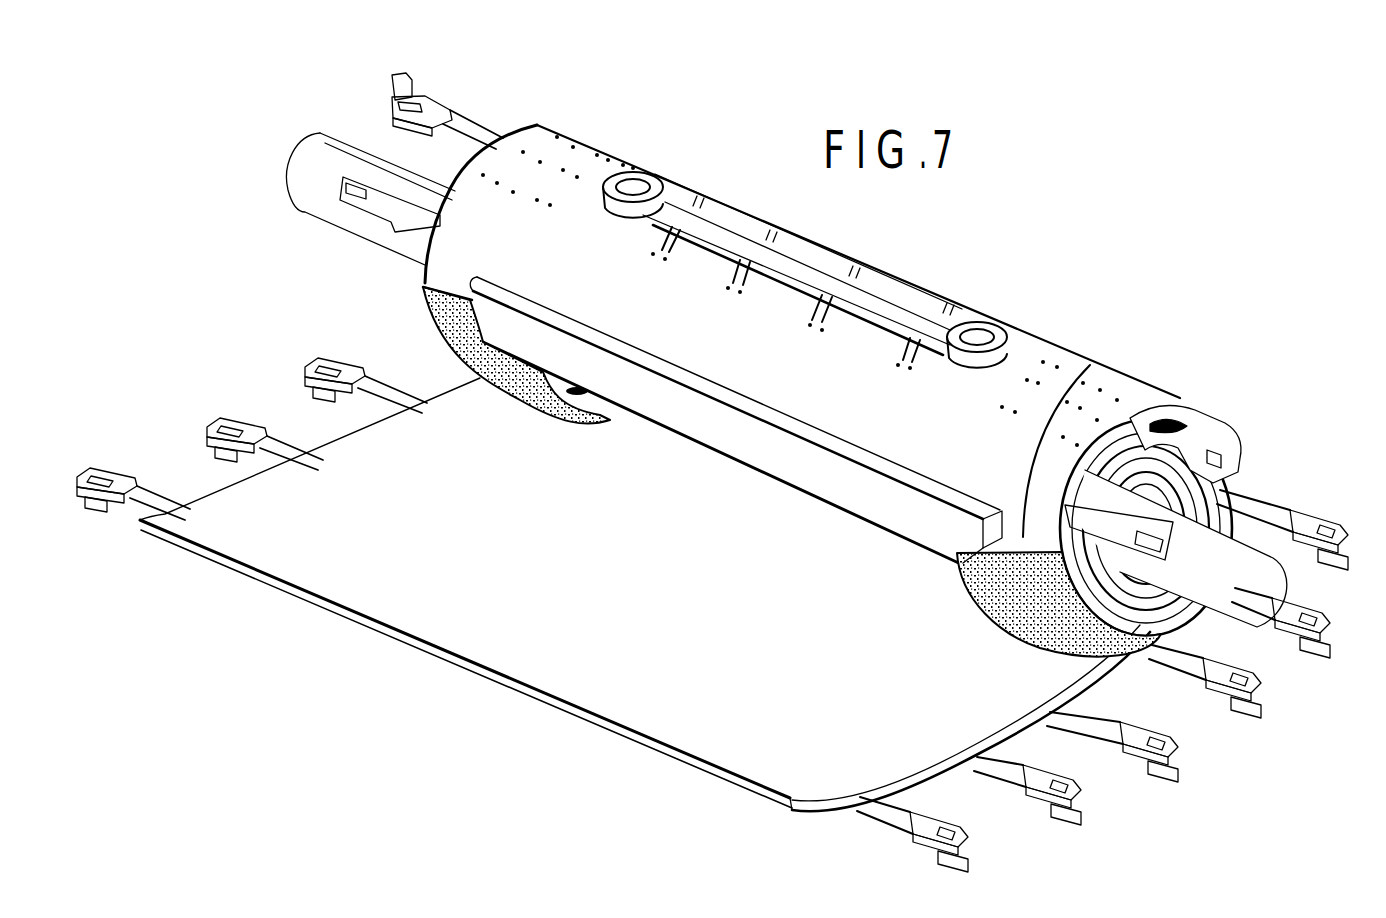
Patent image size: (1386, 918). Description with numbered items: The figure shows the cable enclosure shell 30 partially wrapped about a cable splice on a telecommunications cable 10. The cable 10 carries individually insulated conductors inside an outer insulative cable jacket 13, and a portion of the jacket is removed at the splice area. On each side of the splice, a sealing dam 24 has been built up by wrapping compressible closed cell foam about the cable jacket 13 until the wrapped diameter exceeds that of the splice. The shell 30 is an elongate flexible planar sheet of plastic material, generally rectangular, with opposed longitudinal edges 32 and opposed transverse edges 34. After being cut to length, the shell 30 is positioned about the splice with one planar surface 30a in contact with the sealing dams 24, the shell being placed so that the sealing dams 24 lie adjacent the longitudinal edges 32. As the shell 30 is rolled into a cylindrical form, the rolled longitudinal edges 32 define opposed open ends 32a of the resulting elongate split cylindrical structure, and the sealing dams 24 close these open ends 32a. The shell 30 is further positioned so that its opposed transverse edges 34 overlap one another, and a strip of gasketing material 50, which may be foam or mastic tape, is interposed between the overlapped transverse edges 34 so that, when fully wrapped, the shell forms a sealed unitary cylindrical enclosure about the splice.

The telecommunications cable 10 is at (403, 135).
The cable jacket 13 is at (1232, 588).
The sealing dam 24 is at (425, 290).
The cable enclosure shell 30 is at (357, 568).
The planar surface 30a is at (372, 478).
The longitudinal edge 32 is at (433, 393).
The open end 32a is at (522, 128).
The transverse edge 34 is at (1078, 368).
The strip of gasketing material 50 is at (750, 467).